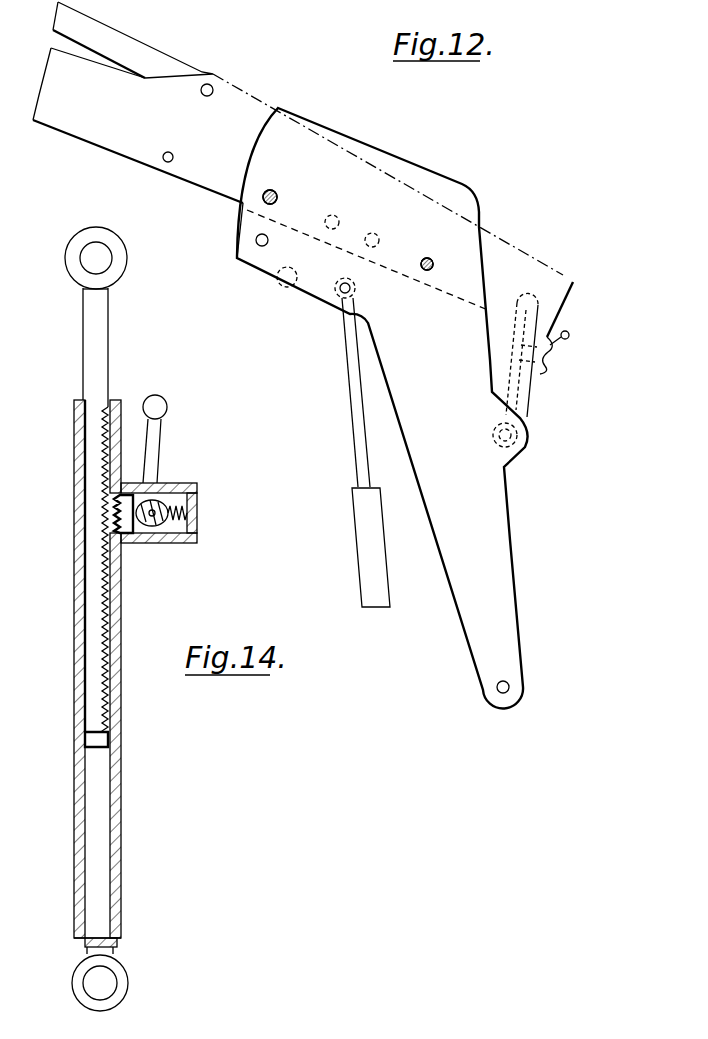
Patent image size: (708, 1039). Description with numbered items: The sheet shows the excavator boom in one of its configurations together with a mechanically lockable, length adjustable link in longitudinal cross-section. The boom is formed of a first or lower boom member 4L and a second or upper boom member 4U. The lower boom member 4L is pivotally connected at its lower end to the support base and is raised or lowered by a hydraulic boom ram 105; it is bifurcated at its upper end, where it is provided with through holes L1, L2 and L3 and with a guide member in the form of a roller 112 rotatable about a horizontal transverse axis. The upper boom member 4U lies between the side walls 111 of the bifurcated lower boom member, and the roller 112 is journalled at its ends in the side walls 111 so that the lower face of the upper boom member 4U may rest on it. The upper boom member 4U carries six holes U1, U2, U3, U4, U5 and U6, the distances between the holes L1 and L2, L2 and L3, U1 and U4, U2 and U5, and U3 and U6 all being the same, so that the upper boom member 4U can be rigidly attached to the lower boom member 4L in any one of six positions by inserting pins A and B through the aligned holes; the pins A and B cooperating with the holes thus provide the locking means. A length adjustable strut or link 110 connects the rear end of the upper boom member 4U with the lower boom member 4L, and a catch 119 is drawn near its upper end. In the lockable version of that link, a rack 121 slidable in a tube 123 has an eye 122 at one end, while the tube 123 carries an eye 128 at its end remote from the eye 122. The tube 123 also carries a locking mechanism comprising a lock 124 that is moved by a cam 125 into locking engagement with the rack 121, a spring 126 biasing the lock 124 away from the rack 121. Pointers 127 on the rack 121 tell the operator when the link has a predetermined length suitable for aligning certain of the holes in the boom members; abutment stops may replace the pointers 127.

In FIG. 12, the upper boom member 4U is at (233, 98).
In FIG. 12, the lower boom member 4L is at (483, 563).
In FIG. 12, the hole U1 is at (163, 155).
In FIG. 12, the hole U2 is at (263, 199).
In FIG. 12, the hole U3 is at (379, 237).
In FIG. 12, the hole U4 is at (337, 218).
In FIG. 12, the hole U5 is at (433, 268).
In FIG. 12, the hole U6 is at (533, 303).
In FIG. 12, the through hole L1 is at (267, 235).
In FIG. 12, the through hole L2 is at (423, 270).
In FIG. 12, the through hole L3 is at (272, 191).
In FIG. 12, the pin A is at (274, 192).
In FIG. 12, the pin B is at (433, 262).
In FIG. 12, the hydraulic boom ram 105 is at (365, 530).
In FIG. 12, the length adjustable link 110 is at (530, 402).
In FIG. 12, the side walls 111 is at (235, 258).
In FIG. 12, the roller 112 is at (287, 288).
In FIG. 12, the catch 119 is at (555, 348).
In FIG. 14, the rack 121 is at (102, 663).
In FIG. 14, the eye 122 is at (87, 253).
In FIG. 14, the tube 123 is at (82, 425).
In FIG. 14, the lock 124 is at (133, 534).
In FIG. 14, the cam 125 is at (147, 503).
In FIG. 14, the spring 126 is at (173, 523).
In FIG. 14, the pointers 127 is at (85, 400).
In FIG. 14, the eye 128 is at (110, 973).